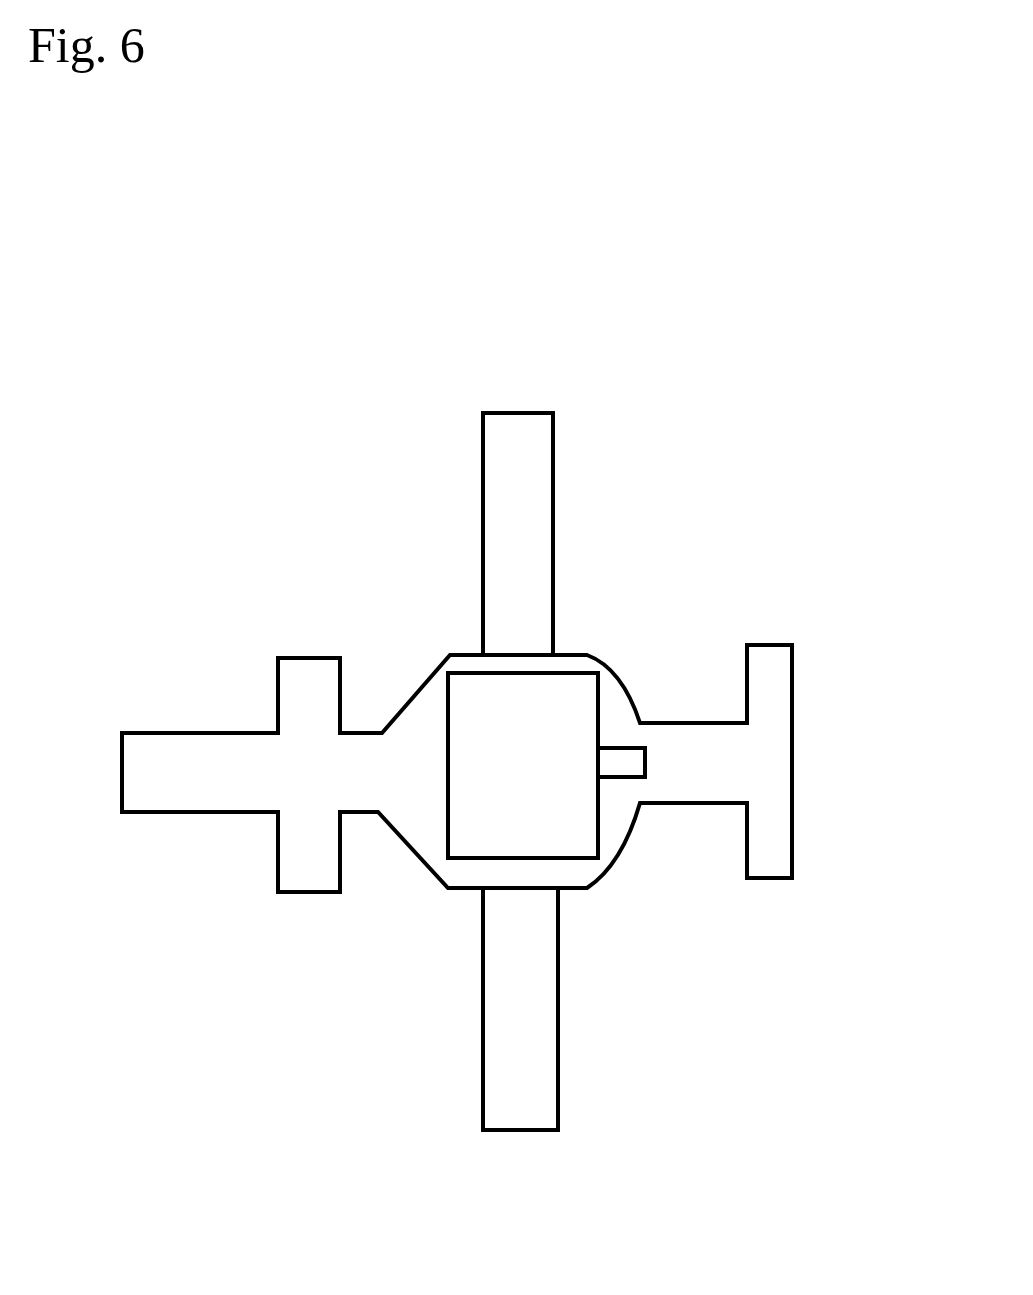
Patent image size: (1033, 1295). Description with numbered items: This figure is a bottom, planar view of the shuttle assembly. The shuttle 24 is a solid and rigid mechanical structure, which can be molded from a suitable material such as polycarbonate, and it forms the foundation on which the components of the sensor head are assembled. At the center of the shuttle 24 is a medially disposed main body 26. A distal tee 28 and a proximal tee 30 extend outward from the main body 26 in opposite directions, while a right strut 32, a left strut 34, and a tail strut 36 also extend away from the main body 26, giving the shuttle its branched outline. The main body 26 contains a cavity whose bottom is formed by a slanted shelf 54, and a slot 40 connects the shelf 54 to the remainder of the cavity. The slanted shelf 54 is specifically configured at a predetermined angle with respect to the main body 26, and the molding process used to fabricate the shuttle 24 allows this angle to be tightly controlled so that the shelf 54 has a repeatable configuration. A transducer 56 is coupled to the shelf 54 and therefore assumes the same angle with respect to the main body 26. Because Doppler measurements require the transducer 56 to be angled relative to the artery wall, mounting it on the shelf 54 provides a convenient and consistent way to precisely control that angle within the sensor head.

The shuttle 24 is at (522, 764).
The main body 26 is at (415, 803).
The distal tee 28 is at (302, 675).
The proximal tee 30 is at (783, 672).
The right strut 32 is at (525, 452).
The left strut 34 is at (538, 1092).
The tail strut 36 is at (152, 762).
The slot 40 is at (628, 762).
The slanted shelf 54 is at (563, 860).
The transducer 56 is at (530, 700).